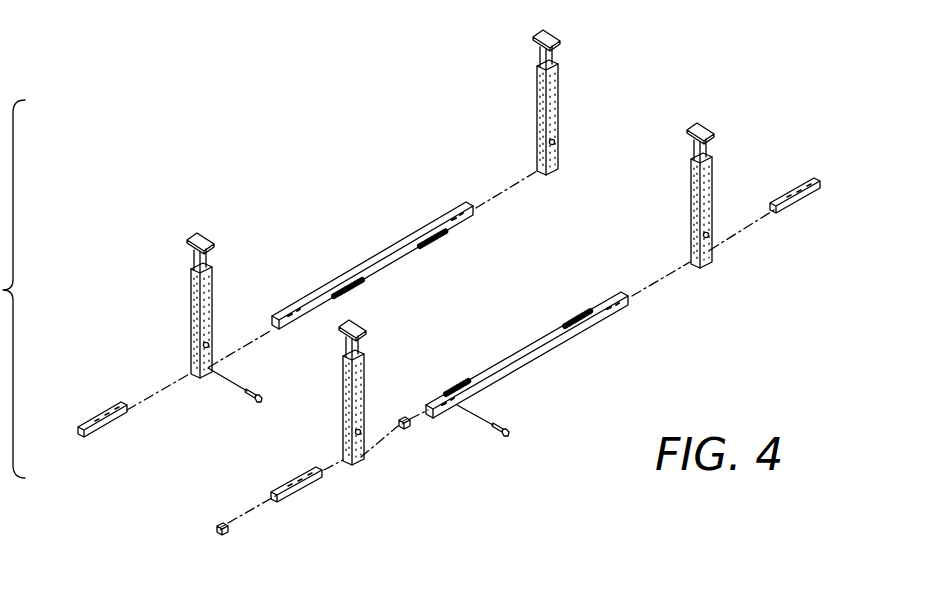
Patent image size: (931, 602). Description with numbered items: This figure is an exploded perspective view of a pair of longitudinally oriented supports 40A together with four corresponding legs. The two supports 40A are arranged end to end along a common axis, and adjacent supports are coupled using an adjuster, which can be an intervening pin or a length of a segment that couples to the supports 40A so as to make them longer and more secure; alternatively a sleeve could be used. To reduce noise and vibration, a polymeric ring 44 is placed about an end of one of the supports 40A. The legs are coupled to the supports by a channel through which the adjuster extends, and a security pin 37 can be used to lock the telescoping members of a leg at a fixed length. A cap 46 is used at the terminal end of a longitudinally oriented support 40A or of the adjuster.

The security pin 37 is at (258, 405).
The longitudinally oriented support 40A is at (560, 342).
The polymeric ring 44 is at (408, 430).
The cap 46 is at (226, 537).